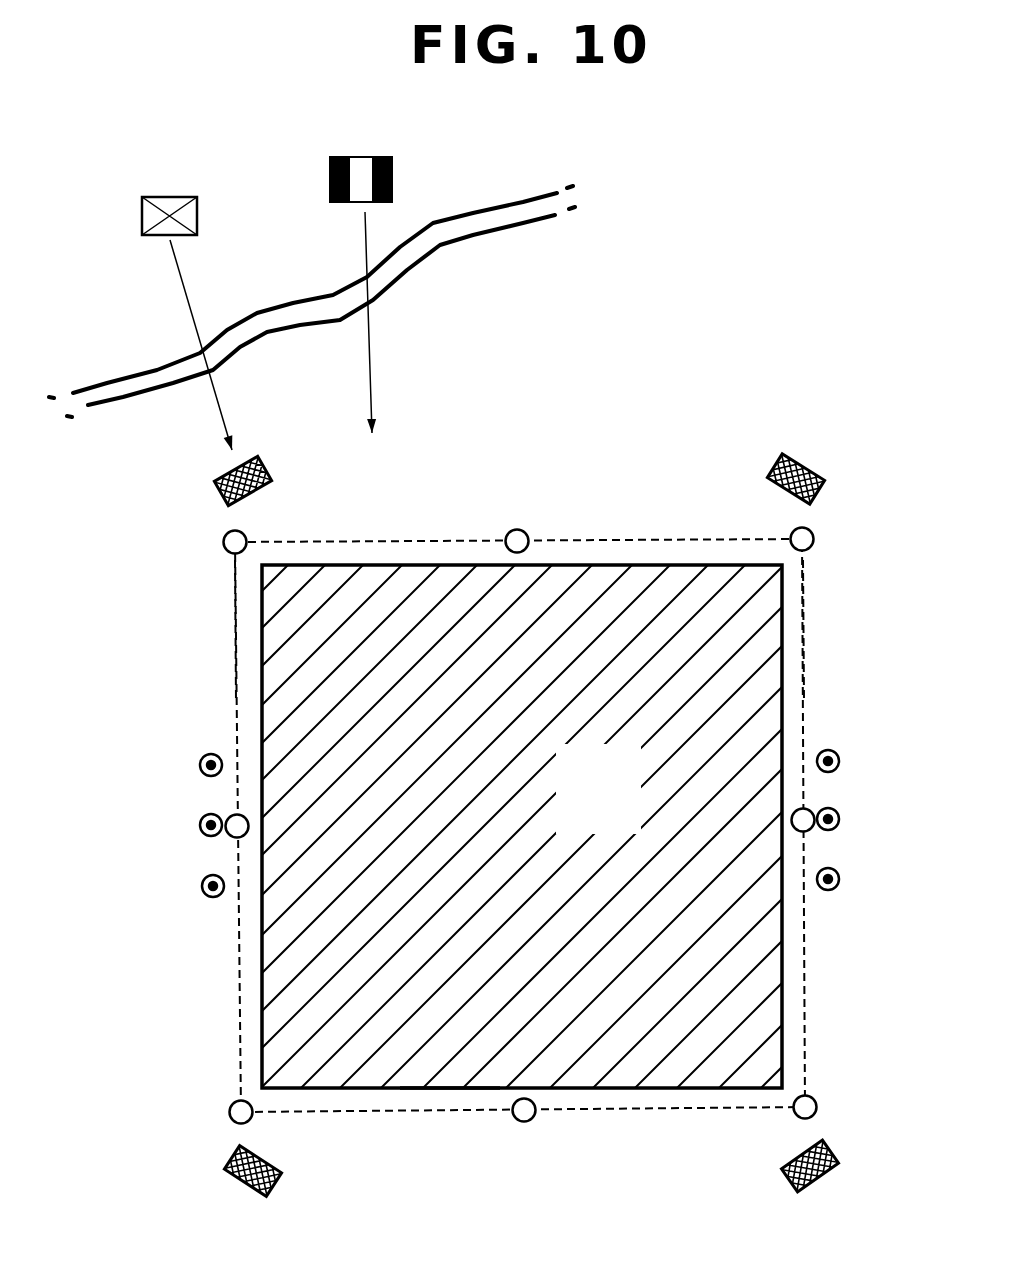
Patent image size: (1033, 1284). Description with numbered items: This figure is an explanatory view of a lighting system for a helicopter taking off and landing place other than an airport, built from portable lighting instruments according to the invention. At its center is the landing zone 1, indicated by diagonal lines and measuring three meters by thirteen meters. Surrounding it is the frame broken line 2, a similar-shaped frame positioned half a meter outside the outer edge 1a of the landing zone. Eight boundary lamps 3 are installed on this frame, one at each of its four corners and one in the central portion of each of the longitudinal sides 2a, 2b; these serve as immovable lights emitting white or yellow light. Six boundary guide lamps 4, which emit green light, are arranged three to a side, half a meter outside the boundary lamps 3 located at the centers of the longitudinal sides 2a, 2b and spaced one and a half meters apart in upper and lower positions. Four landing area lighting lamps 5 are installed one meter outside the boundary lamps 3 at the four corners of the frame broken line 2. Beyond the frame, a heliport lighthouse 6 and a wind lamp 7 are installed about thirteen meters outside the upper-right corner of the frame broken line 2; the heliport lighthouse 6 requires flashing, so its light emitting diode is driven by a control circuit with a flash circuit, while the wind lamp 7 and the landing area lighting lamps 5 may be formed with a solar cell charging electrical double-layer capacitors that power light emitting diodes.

The landing zone 1 is at (612, 807).
The outer edge 1a is at (448, 1091).
The frame broken line 2 is at (383, 1114).
The longitudinal side 2a is at (235, 650).
The longitudinal side 2b is at (805, 675).
The boundary lamp 3 is at (223, 542).
The boundary guide lamp 4 is at (200, 760).
The landing area lighting lamp 5 is at (272, 468).
The heliport lighthouse 6 is at (177, 197).
The wind lamp 7 is at (345, 156).